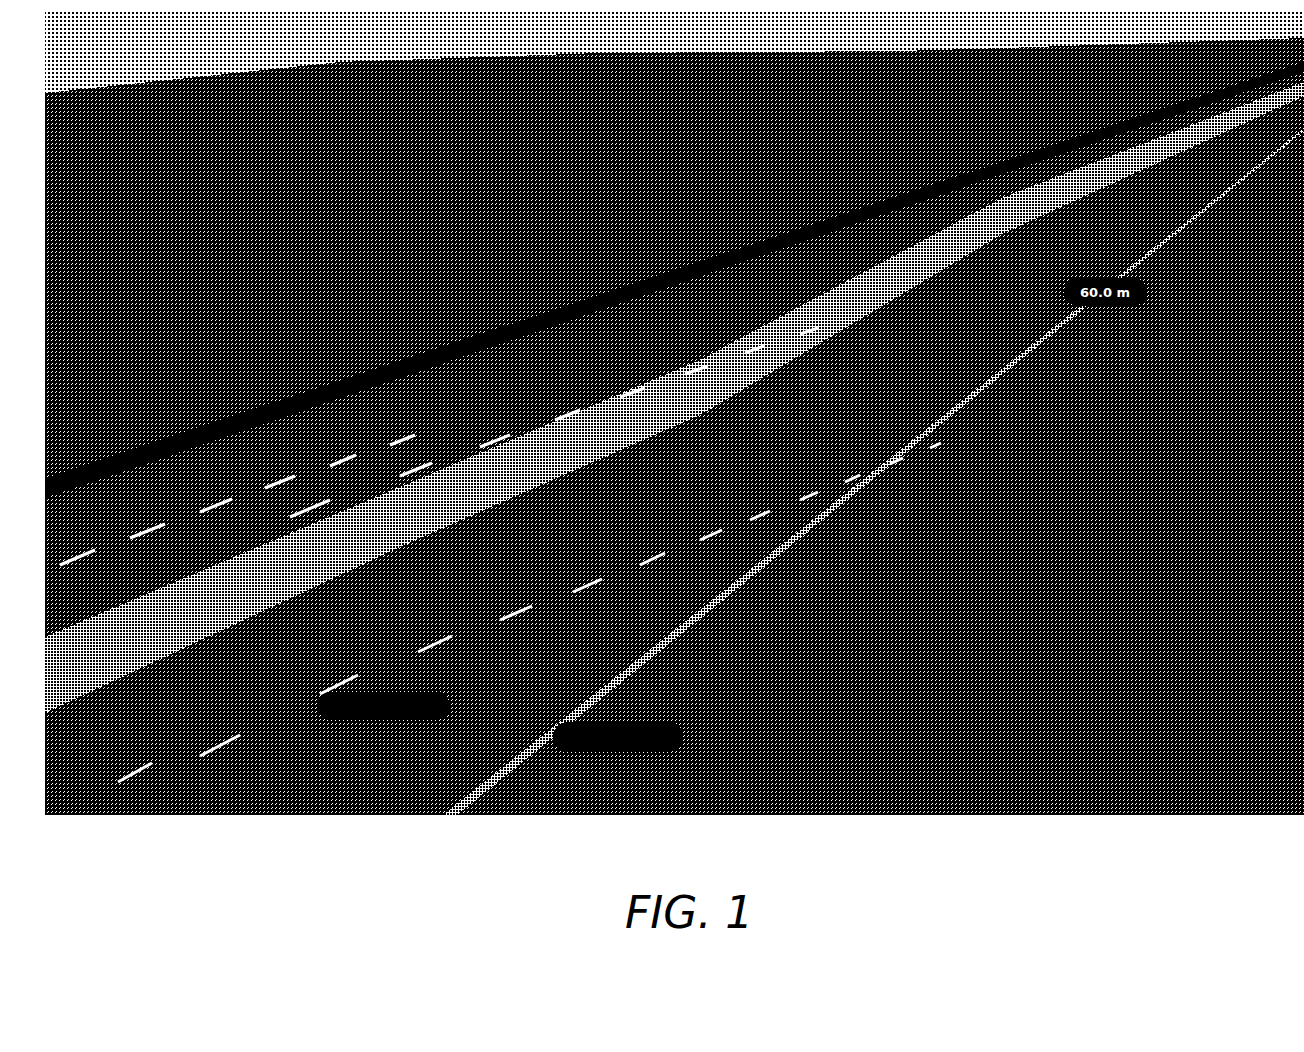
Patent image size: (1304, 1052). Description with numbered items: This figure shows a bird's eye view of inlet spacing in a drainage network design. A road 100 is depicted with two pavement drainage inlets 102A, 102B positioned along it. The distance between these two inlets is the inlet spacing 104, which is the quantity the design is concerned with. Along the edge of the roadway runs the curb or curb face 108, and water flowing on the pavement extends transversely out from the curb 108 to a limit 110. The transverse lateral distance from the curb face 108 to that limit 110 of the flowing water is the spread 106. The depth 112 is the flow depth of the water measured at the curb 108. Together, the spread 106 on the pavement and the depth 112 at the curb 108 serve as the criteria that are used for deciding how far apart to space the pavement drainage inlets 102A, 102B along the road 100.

The road 100 is at (157, 740).
The inlet 102A is at (502, 747).
The inlet 102B is at (1246, 178).
The inlet spacing 104 is at (805, 375).
The spread 106 is at (383, 720).
The curb 108 is at (641, 664).
The limit of the water flowing on the roadway 110 is at (203, 603).
The depth 112 is at (618, 752).